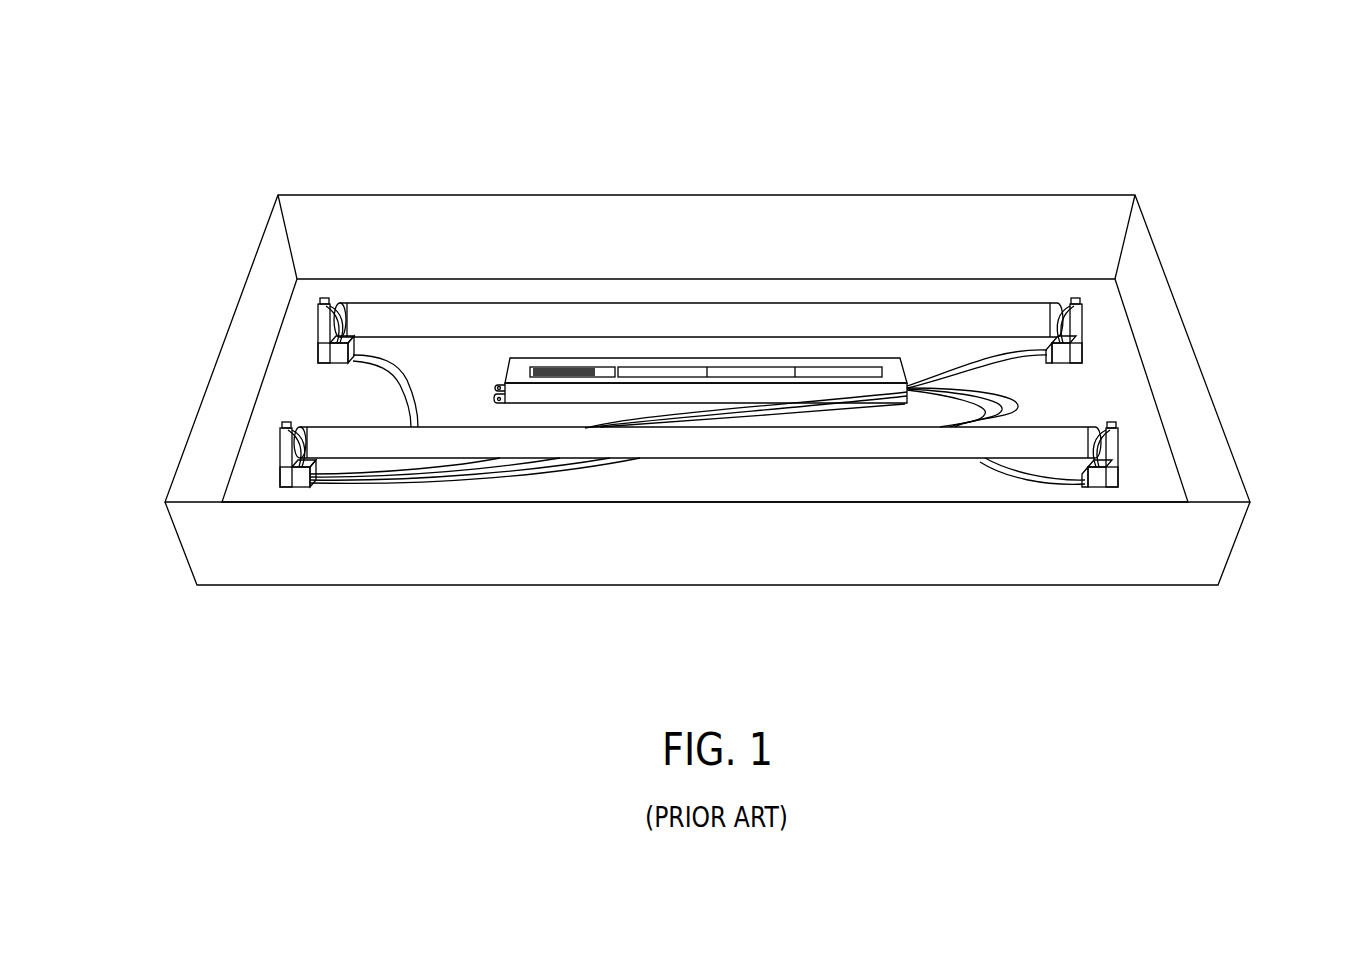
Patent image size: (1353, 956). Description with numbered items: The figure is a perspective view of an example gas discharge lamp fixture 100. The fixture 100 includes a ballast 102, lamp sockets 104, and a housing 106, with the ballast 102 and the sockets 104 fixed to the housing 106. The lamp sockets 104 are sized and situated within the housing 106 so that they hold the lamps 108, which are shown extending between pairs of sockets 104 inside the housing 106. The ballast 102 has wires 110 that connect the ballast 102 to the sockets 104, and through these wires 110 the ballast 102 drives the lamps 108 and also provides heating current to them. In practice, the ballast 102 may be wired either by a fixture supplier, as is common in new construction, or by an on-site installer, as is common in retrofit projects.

The gas discharge lamp fixture 100 is at (398, 134).
The ballast 102 is at (578, 395).
The lamp sockets 104 is at (328, 356).
The housing 106 is at (739, 194).
The lamps 108 is at (655, 318).
The wires 110 is at (935, 385).